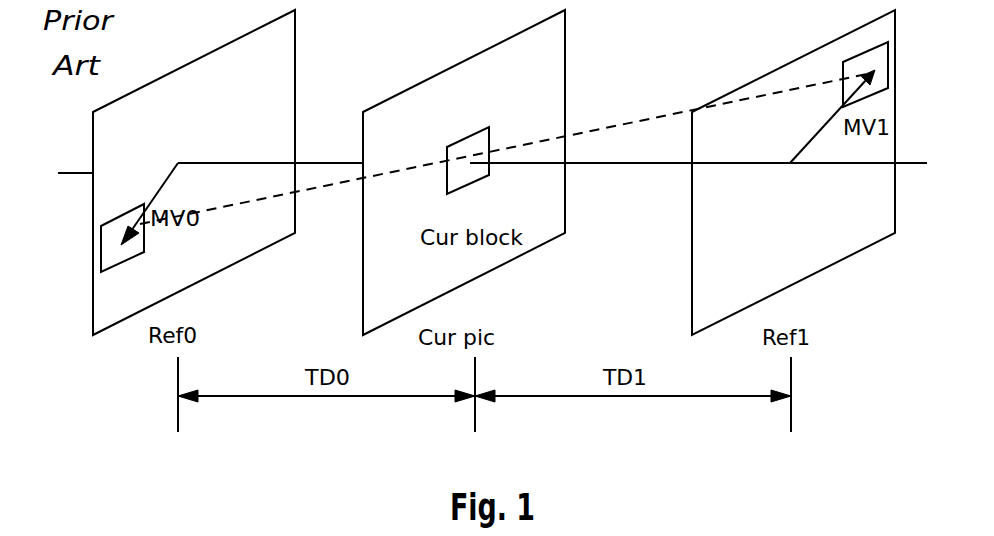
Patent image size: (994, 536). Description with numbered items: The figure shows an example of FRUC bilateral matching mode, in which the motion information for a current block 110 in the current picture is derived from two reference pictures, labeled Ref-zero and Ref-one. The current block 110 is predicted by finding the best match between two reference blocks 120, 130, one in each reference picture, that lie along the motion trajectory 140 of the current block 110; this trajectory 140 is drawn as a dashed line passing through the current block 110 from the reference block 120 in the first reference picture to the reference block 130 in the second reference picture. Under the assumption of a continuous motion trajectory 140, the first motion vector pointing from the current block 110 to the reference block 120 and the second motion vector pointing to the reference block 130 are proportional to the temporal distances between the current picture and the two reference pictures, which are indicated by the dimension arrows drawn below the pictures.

The current block 110 is at (470, 137).
The reference block in Ref0 120 is at (122, 213).
The reference block in Ref1 130 is at (861, 57).
The motion trajectory 140 is at (657, 118).